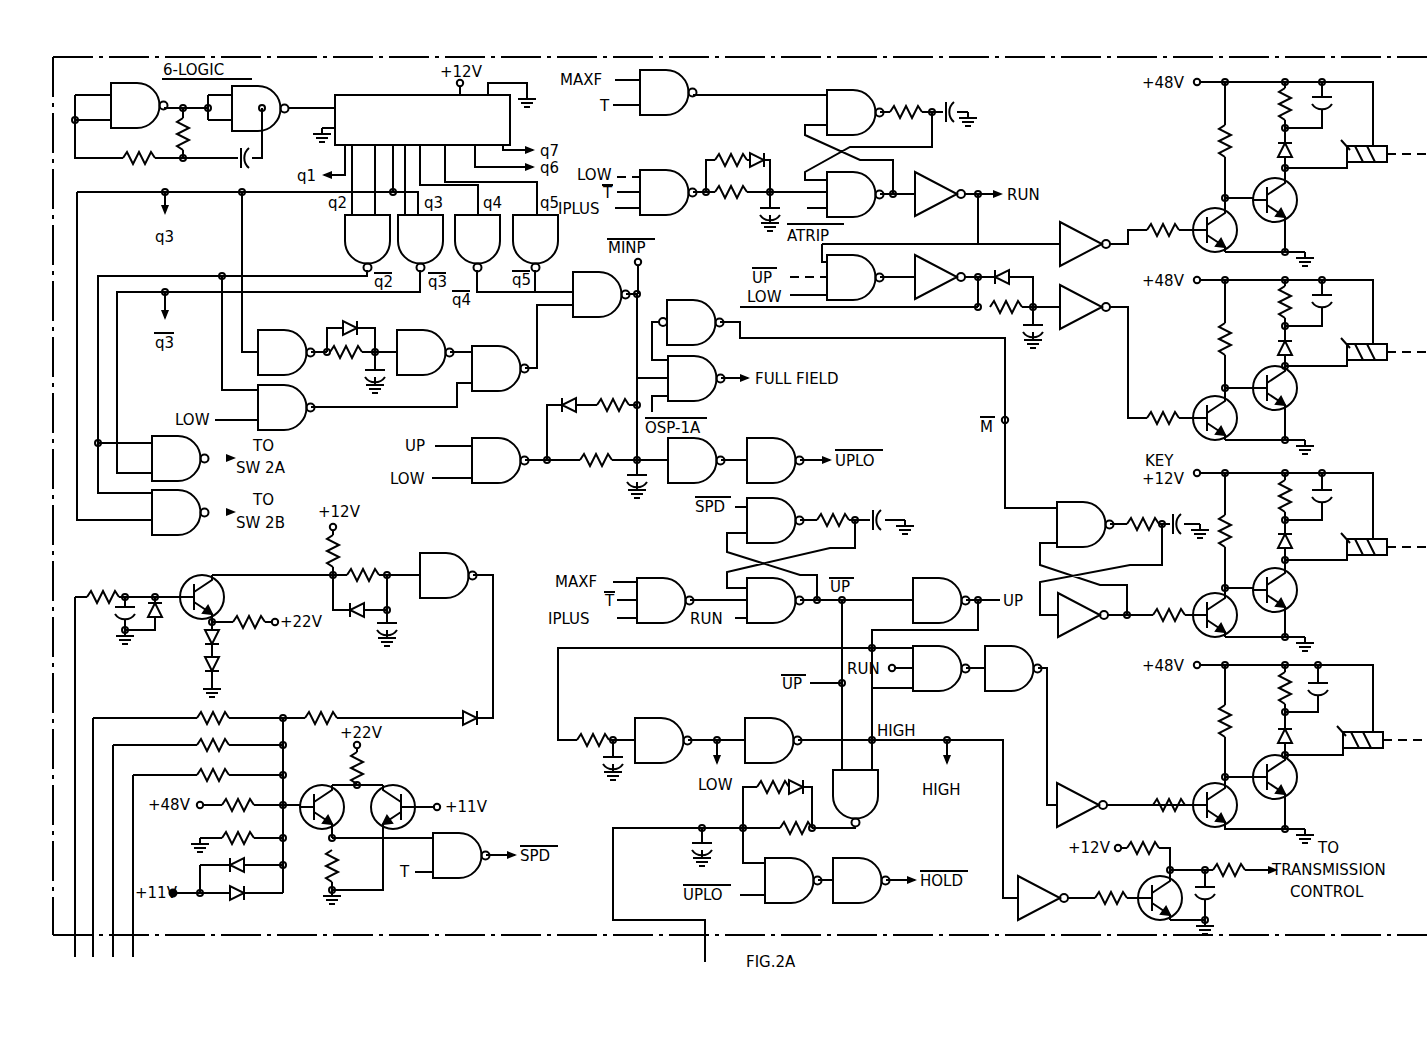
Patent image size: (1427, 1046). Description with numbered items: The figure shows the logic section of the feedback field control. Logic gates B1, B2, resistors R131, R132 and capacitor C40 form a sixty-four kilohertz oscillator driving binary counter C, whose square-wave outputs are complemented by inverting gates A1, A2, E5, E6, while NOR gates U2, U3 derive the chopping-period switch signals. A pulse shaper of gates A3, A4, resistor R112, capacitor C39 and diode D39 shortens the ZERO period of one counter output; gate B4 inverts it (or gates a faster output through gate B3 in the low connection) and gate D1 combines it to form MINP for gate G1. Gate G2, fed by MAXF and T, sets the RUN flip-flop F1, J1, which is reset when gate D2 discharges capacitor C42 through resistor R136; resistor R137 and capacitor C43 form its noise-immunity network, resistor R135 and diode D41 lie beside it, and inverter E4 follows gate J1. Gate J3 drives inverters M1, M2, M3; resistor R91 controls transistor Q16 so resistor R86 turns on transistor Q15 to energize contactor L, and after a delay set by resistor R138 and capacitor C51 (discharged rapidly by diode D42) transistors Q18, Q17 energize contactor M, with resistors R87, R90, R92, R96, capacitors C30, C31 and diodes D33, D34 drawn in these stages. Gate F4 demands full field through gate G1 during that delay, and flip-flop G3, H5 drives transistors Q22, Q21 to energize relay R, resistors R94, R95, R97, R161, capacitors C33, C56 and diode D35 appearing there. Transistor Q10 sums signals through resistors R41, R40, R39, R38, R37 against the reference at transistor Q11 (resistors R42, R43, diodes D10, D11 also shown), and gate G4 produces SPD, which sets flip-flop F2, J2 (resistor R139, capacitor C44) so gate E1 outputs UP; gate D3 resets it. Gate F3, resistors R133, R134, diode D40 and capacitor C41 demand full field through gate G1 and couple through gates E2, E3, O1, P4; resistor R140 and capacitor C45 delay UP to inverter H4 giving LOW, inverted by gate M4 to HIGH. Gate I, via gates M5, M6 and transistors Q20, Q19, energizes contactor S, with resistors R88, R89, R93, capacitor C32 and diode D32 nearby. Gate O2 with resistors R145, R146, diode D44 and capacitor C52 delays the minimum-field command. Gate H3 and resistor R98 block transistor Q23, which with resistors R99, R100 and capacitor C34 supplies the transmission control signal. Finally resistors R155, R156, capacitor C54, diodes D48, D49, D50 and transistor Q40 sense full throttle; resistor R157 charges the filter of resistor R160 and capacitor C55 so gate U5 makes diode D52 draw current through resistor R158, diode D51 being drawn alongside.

The binary counter C is at (422, 120).
The logic gate B1 is at (139, 105).
The logic gate B2 is at (260, 108).
The inverting gate A1 is at (367, 243).
The inverting gate A2 is at (420, 243).
The inverting gate E5 is at (477, 243).
The inverting gate E6 is at (535, 243).
The gate D1 is at (601, 294).
The logic gate A3 is at (286, 352).
The logic gate A4 is at (425, 352).
The logic gate B3 is at (286, 407).
The logic gate B4 is at (500, 368).
The gate F3 is at (500, 460).
The NOR gate U2 is at (180, 458).
The NOR gate U3 is at (180, 512).
The gate F4 is at (691, 322).
The gate G1 is at (696, 378).
The gate E2 is at (696, 460).
The gate E3 is at (775, 460).
The gate F2 is at (775, 520).
The gate G2 is at (668, 92).
The gate D2 is at (668, 192).
The gate F1 is at (855, 112).
The gate J1 is at (855, 194).
The gate J3 is at (855, 277).
The inverter E4 is at (940, 194).
The inverter M1 is at (940, 277).
The gate M2 is at (1085, 244).
The inverter M3 is at (1085, 307).
The gate G3 is at (1085, 524).
The gate H5 is at (1083, 615).
The logic gate D3 is at (665, 600).
The gate J2 is at (775, 600).
The gate E1 is at (941, 600).
The gate I is at (941, 668).
The gate M5 is at (1013, 668).
The gate M6 is at (1082, 805).
The gate H3 is at (1043, 898).
The inverter H4 is at (663, 740).
The inverter M4 is at (773, 740).
The gate O2 is at (855, 798).
The gate O1 is at (793, 880).
The gate P4 is at (861, 880).
The gate U5 is at (448, 575).
The gate G4 is at (461, 855).
The resistor R131 is at (178, 128).
The resistor R132 is at (134, 162).
The resistor R112 is at (347, 360).
The resistor R133 is at (606, 414).
The resistor R134 is at (604, 454).
The resistor R135 is at (720, 153).
The resistor R136 is at (710, 211).
The resistor R137 is at (913, 105).
The resistor R138 is at (990, 312).
The resistor R139 is at (829, 508).
The resistor R140 is at (588, 735).
The resistor R145 is at (766, 792).
The resistor R146 is at (786, 833).
The resistor R155 is at (105, 587).
The resistor R156 is at (244, 615).
The resistor R157 is at (326, 552).
The resistor R158 is at (326, 712).
The resistor R160 is at (359, 565).
The resistor R41 is at (201, 712).
The resistor R40 is at (201, 739).
The resistor R39 is at (201, 769).
The resistor R38 is at (226, 800).
The resistor R37 is at (226, 832).
The resistor R42 is at (306, 862).
The resistor R43 is at (362, 770).
The resistor R86 is at (1217, 134).
The resistor R87 is at (1217, 332).
The resistor R88 is at (1217, 715).
The resistor R89 is at (1272, 688).
The resistor R90 is at (1272, 304).
The resistor R91 is at (1166, 222).
The resistor R92 is at (1166, 412).
The resistor R93 is at (1163, 799).
The resistor R94 is at (1166, 611).
The resistor R95 is at (1133, 518).
The resistor R96 is at (1274, 106).
The resistor R97 is at (1218, 522).
The resistor R98 is at (1104, 894).
The resistor R99 is at (1138, 842).
The resistor R100 is at (1226, 866).
The resistor R161 is at (1272, 498).
The capacitor C40 is at (248, 156).
The capacitor C39 is at (388, 382).
The capacitor C41 is at (632, 480).
The capacitor C42 is at (763, 222).
The capacitor C43 is at (953, 103).
The capacitor C44 is at (874, 507).
The capacitor C45 is at (600, 758).
The capacitor C51 is at (1040, 336).
The capacitor C52 is at (690, 848).
The capacitor C54 is at (112, 619).
The capacitor C55 is at (402, 628).
The capacitor C30 is at (1337, 108).
The capacitor C31 is at (1337, 306).
The capacitor C32 is at (1332, 692).
The capacitor C33 is at (1181, 535).
The capacitor C34 is at (1216, 890).
The capacitor C56 is at (1329, 497).
The diode D39 is at (346, 322).
The diode D40 is at (575, 400).
The diode D41 is at (760, 150).
The diode D42 is at (1008, 274).
The diode D44 is at (800, 778).
The diode D48 is at (161, 620).
The diode D49 is at (219, 662).
The diode D50 is at (205, 639).
The diode D51 is at (356, 617).
The diode D52 is at (465, 714).
The diode D10 is at (242, 902).
The diode D11 is at (236, 860).
The diode D32 is at (1276, 726).
The diode D33 is at (1276, 346).
The diode D34 is at (1276, 146).
The diode D35 is at (1276, 536).
The transistor Q40 is at (191, 574).
The transistor Q10 is at (305, 787).
The transistor Q11 is at (406, 787).
The transistor Q16 is at (1195, 209).
The transistor Q15 is at (1298, 200).
The transistor Q18 is at (1195, 398).
The transistor Q17 is at (1254, 370).
The transistor Q22 is at (1195, 599).
The transistor Q21 is at (1255, 570).
The transistor Q20 is at (1196, 787).
The transistor Q19 is at (1256, 759).
The transistor Q23 is at (1138, 887).
The contactor L coil L is at (1357, 168).
The contactor M coil M is at (1355, 366).
The relay R coil R is at (1356, 561).
The contactor S coil S is at (1356, 758).